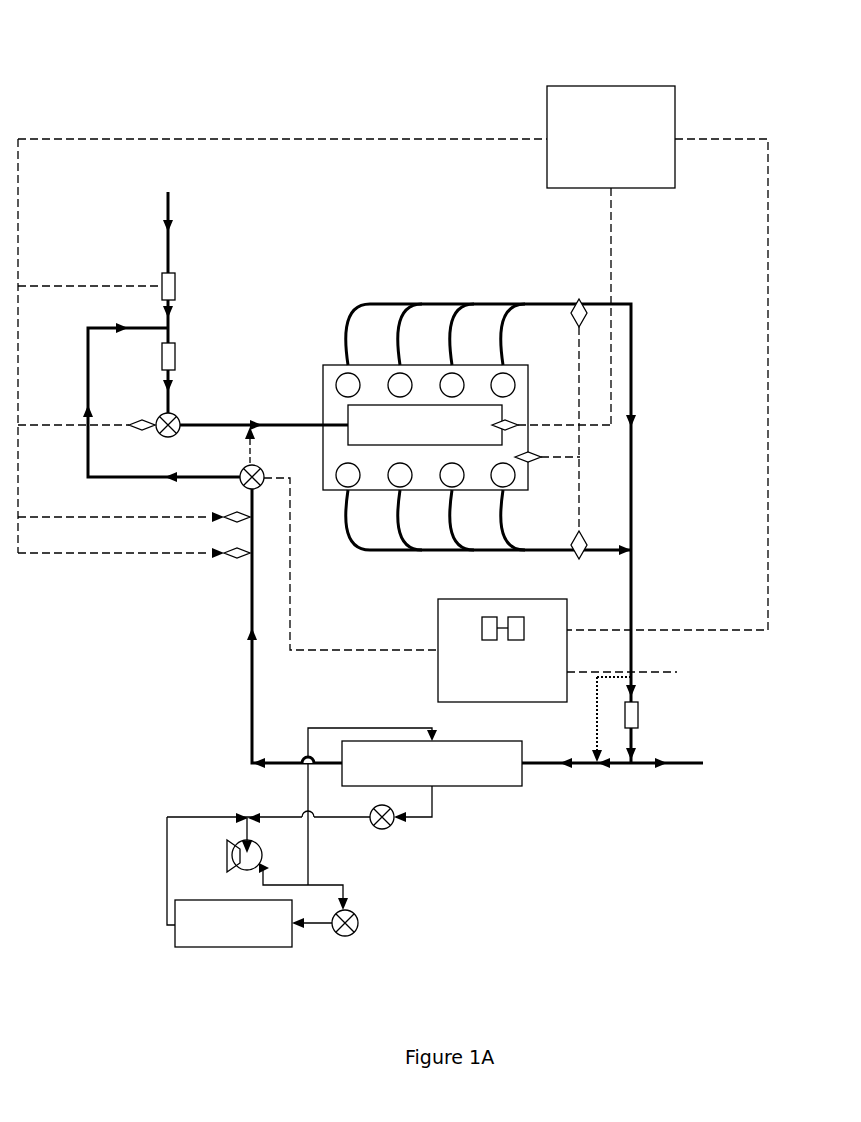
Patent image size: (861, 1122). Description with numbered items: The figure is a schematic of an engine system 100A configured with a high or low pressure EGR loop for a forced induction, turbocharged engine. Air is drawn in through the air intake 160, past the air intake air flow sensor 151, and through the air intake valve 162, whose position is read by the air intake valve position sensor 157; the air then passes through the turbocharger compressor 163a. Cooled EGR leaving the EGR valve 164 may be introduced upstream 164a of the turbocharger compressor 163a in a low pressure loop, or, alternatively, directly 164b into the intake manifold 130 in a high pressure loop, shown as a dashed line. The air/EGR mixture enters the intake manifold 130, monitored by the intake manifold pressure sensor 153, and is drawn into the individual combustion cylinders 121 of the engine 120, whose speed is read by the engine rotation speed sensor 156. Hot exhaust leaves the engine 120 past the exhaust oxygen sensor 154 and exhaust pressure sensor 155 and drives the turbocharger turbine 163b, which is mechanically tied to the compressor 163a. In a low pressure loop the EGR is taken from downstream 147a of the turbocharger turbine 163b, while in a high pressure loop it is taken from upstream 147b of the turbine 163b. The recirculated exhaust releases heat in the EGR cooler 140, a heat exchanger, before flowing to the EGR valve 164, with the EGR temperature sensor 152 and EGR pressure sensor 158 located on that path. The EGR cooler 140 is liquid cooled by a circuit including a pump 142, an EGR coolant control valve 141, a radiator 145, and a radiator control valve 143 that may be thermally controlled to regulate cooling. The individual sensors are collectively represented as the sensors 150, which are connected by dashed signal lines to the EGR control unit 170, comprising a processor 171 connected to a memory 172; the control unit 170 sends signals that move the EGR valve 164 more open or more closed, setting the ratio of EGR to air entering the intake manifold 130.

The engine system 100A is at (84, 102).
The sensors 150 is at (608, 84).
The air intake 160 is at (190, 192).
The air intake air flow sensor 151 is at (160, 280).
The upstream location of turbocharger compressor 164a is at (157, 325).
The turbocharger compressor 163a is at (178, 356).
The air intake valve 162 is at (184, 415).
The air intake valve position sensor 157 is at (128, 424).
The intake manifold 130 is at (358, 413).
The direct EGR path into intake manifold 164b is at (240, 432).
The EGR valve 164 is at (267, 481).
The EGR temperature sensor 152 is at (212, 518).
The EGR pressure sensor 158 is at (212, 554).
The engine 120 is at (333, 361).
The combustion cylinders 121 is at (347, 385).
The intake manifold pressure sensor 153 is at (510, 421).
The engine rotation speed sensor 156 is at (543, 453).
The exhaust oxygen sensor 154 is at (584, 299).
The exhaust pressure sensor 155 is at (584, 540).
The EGR control unit 170 is at (507, 598).
The processor 171 is at (484, 617).
The memory 172 is at (520, 617).
The upstream location of turbocharger turbine 147b is at (634, 678).
The turbocharger turbine 163b is at (640, 720).
The downstream location of turbocharger turbine 147a is at (633, 773).
The EGR cooler 140 is at (528, 767).
The EGR coolant control valve 141 is at (386, 835).
The pump 142 is at (237, 839).
The radiator control valve 143 is at (348, 939).
The radiator 145 is at (234, 950).